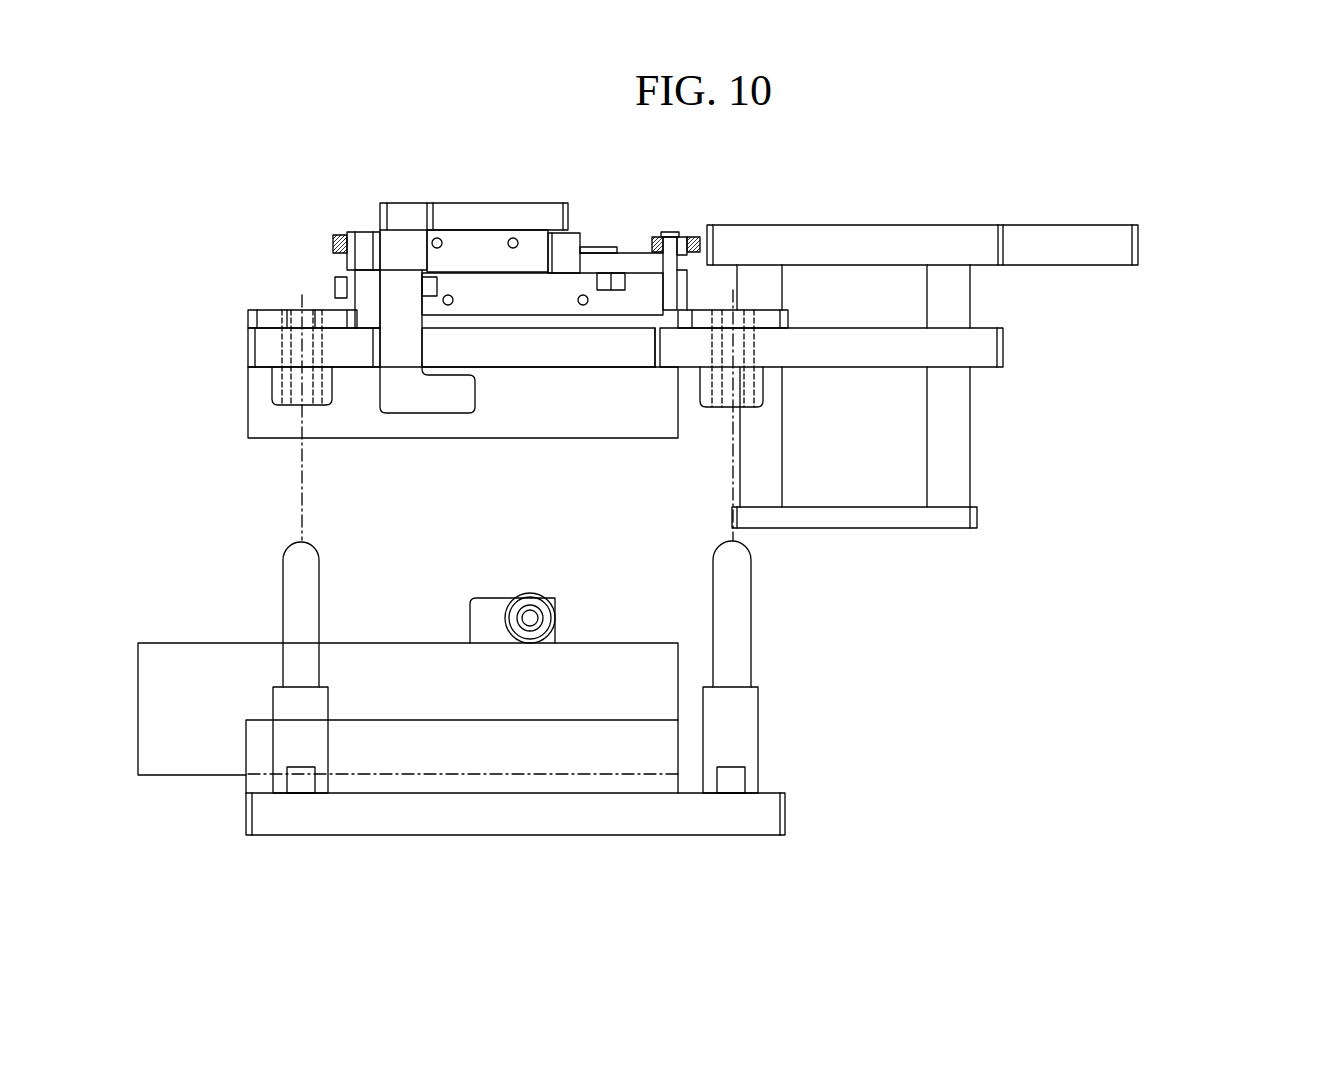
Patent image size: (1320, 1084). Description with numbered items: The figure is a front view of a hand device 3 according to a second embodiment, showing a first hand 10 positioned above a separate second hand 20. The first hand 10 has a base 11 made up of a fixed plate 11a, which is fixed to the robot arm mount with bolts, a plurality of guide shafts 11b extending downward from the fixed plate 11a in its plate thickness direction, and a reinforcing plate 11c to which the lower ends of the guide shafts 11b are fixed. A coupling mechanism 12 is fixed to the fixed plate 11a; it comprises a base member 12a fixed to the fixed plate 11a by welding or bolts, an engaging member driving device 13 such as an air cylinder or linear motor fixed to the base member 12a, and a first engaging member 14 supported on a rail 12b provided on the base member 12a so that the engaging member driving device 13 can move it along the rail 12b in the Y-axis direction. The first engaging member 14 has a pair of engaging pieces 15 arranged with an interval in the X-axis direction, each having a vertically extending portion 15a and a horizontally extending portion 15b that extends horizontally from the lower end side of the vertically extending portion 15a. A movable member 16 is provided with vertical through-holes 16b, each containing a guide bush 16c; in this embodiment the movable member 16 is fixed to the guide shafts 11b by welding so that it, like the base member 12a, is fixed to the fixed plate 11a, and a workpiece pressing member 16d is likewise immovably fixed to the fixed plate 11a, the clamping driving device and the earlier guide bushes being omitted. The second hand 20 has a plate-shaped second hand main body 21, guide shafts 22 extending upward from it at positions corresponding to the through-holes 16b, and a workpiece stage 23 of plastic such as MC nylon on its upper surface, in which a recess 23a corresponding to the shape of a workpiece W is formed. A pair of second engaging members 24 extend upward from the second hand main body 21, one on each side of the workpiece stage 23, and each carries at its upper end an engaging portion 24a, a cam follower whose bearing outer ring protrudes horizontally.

The hand device 3 is at (272, 178).
The first hand 10 is at (1028, 378).
The base 11 is at (968, 365).
The fixed plate 11a is at (1140, 243).
The guide shafts 11b is at (782, 452).
The reinforcing plate 11c is at (890, 528).
The coupling mechanism 12 is at (522, 213).
The base member 12a is at (670, 232).
The rail 12b is at (633, 247).
The engaging member driving device 13 is at (578, 233).
The first engaging member 14 is at (407, 203).
The engaging pieces 15 is at (460, 391).
The vertically extending portion 15a is at (422, 348).
The horizontally extending portion 15b is at (408, 413).
The movable member 16 is at (460, 415).
The through-holes 16b is at (328, 360).
The guide bush 16c is at (272, 389).
The workpiece pressing member 16d is at (246, 418).
The second hand 20 is at (842, 785).
The second hand main body 21 is at (516, 835).
The guide shafts 22 is at (328, 744).
The workpiece stage 23 is at (424, 745).
The recess 23a is at (610, 773).
The second engaging members 24 is at (536, 584).
The engaging portion 24a is at (546, 598).
The workpiece W is at (190, 643).